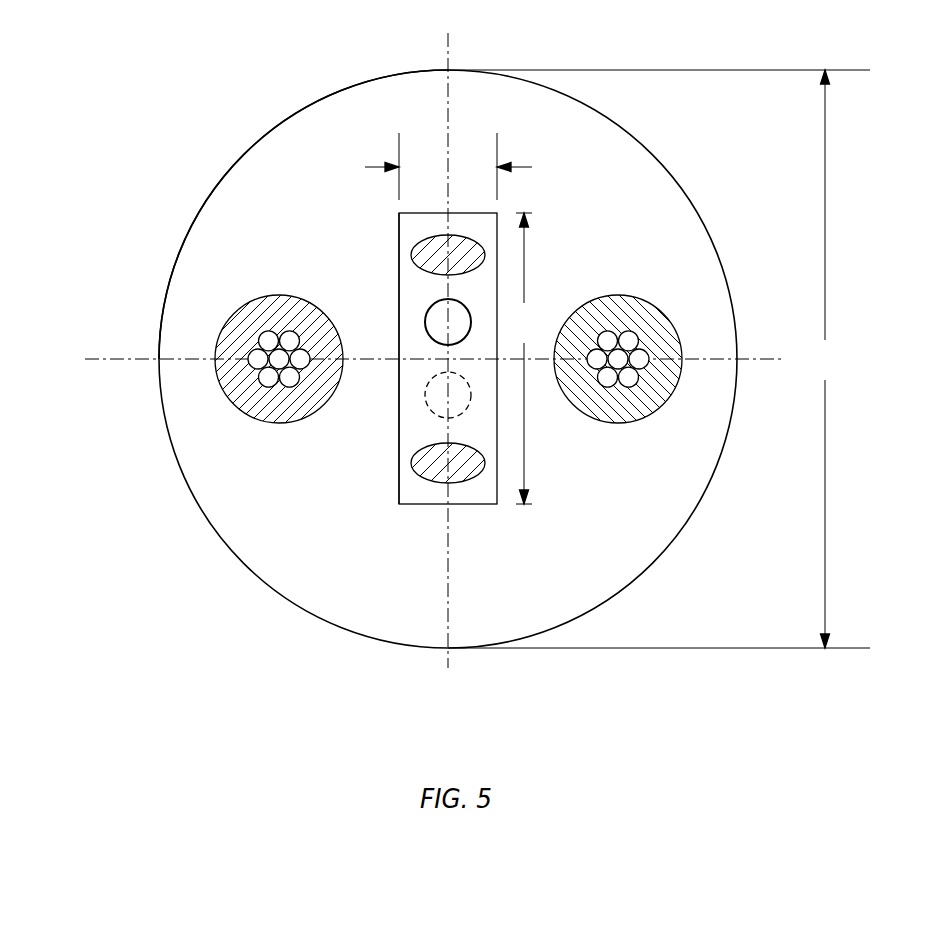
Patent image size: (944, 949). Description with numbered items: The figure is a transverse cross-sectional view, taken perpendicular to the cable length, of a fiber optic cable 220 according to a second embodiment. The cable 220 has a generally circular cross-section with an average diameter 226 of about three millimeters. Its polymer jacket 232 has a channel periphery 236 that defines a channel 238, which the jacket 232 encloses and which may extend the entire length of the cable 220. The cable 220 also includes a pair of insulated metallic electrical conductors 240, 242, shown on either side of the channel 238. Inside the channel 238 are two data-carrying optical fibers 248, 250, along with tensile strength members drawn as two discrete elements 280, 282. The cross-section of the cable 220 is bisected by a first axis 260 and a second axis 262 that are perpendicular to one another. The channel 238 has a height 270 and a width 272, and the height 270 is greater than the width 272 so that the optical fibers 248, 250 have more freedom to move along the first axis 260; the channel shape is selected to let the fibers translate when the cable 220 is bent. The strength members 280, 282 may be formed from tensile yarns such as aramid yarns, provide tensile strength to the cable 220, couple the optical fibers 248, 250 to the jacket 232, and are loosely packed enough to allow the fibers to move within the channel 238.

The cable 220 is at (140, 95).
The average diameter 226 is at (659, 359).
The polymer jacket 232 is at (198, 442).
The channel periphery 236 is at (399, 240).
The channel 238 is at (413, 388).
The insulated metallic electrical conductor 240 is at (222, 322).
The insulated metallic electrical conductor 242 is at (666, 407).
The optical fiber 248 is at (430, 305).
The optical fiber 250 is at (470, 403).
The first axis 260 is at (449, 335).
The second axis 262 is at (414, 359).
The channel height 270 is at (528, 358).
The channel width 272 is at (448, 166).
The tensile strength member 280 is at (470, 245).
The tensile strength member 282 is at (420, 463).